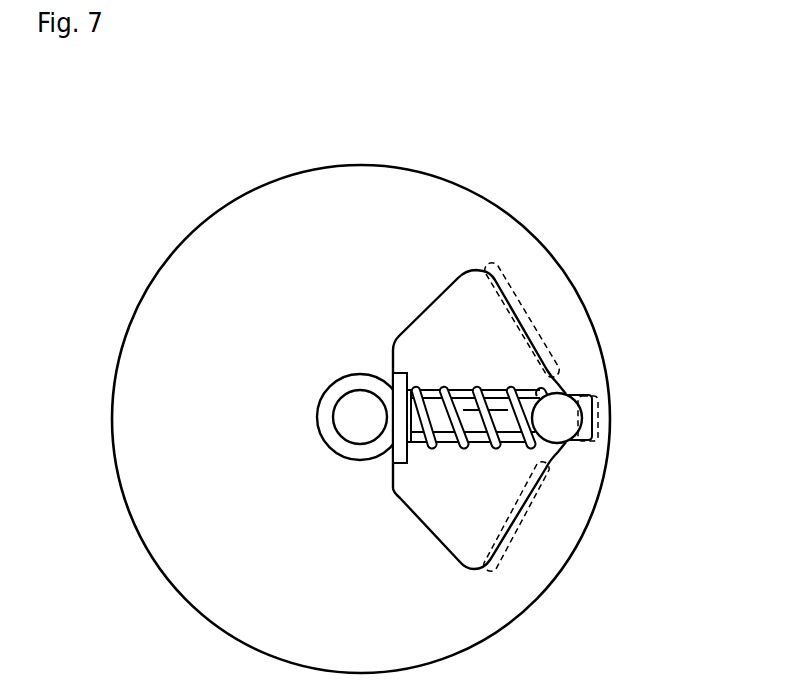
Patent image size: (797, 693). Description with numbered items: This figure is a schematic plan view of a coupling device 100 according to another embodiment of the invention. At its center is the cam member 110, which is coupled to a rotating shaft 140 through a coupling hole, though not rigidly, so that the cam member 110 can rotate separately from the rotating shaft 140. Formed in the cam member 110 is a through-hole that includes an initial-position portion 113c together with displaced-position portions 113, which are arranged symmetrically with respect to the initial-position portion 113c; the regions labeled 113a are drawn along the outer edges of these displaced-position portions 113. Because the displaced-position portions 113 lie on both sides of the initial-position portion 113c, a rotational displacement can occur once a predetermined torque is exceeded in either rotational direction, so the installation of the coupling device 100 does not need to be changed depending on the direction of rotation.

The coupling device 100 is at (148, 178).
The cam member 110 is at (365, 185).
The displaced-position portions 113 is at (438, 320).
The guide slot 113a is at (535, 312).
The initial-position portion 113c is at (600, 422).
The rotating shaft 140 is at (358, 436).